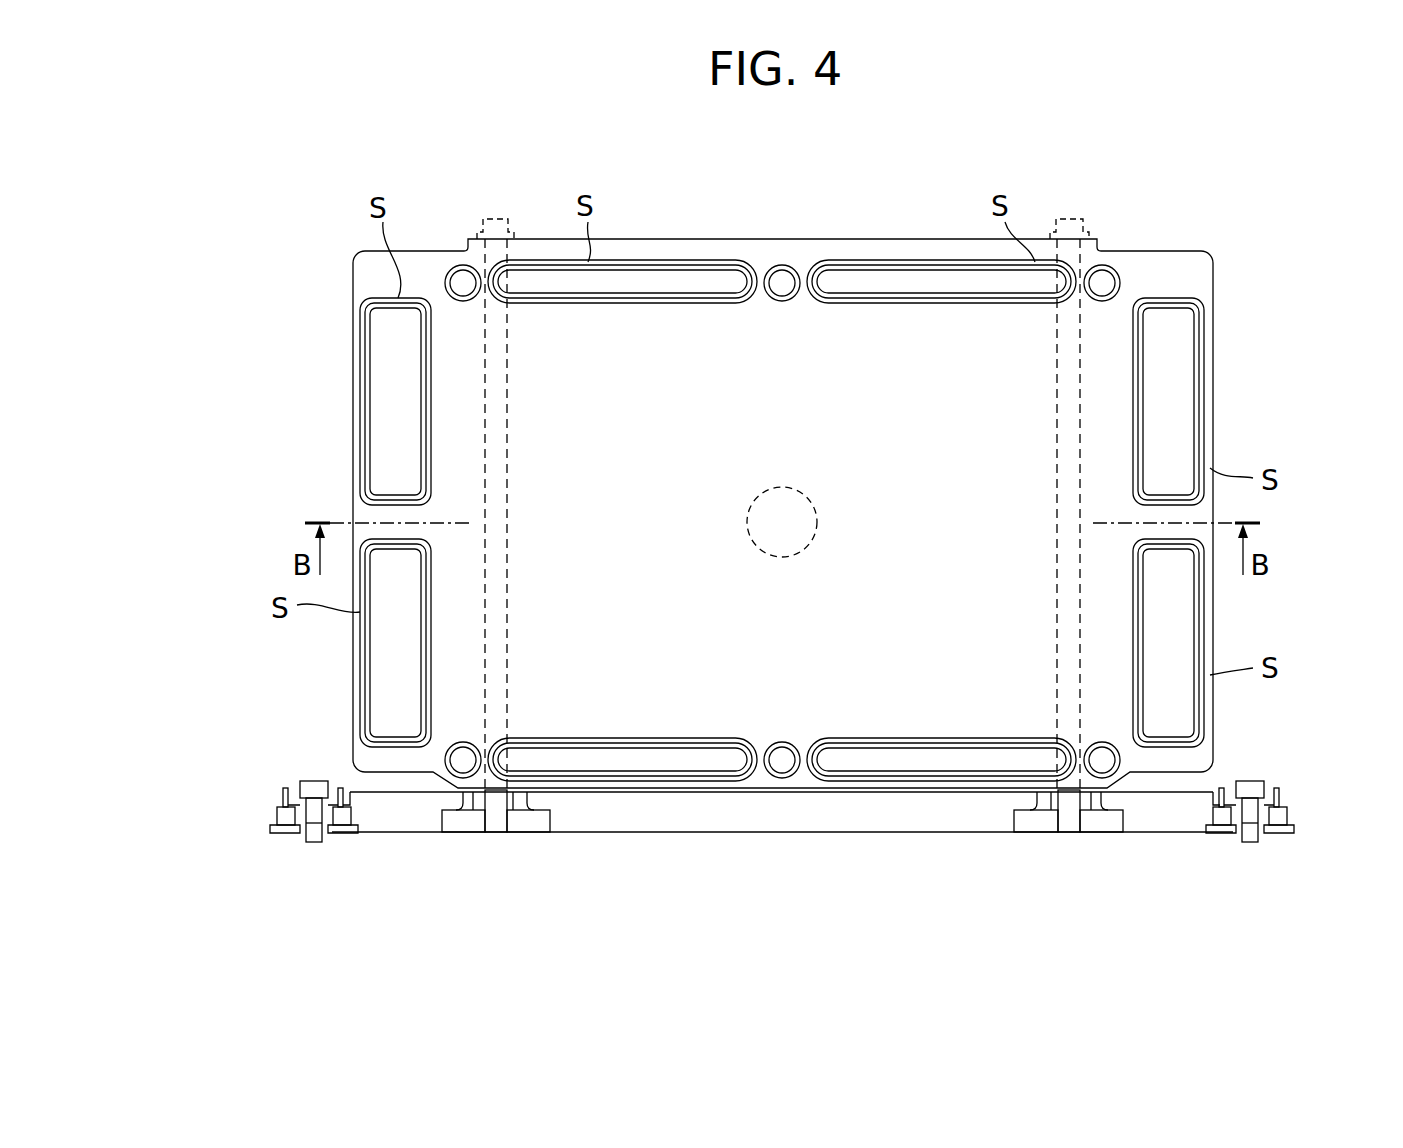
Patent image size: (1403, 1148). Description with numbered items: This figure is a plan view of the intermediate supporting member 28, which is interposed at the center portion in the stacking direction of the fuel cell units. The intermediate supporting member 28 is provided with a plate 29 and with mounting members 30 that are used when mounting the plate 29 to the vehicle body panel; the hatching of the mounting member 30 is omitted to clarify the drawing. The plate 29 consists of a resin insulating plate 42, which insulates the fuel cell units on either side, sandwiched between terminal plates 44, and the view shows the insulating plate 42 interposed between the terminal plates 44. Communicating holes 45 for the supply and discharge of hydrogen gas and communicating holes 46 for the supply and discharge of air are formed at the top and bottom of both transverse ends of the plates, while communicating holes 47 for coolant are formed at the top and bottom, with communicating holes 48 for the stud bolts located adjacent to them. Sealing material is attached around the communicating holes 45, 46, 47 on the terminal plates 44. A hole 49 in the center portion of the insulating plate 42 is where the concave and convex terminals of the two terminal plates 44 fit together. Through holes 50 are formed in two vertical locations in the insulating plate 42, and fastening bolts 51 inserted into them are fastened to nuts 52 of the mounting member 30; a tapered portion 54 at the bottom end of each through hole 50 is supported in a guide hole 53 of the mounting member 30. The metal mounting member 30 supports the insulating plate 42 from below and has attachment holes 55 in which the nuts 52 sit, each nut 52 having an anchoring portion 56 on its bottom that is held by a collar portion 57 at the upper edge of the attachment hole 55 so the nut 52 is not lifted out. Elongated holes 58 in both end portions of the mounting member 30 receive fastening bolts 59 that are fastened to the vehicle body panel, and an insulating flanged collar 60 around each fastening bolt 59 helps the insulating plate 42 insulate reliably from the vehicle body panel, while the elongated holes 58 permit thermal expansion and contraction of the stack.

The intermediate supporting member 28 is at (1236, 294).
The plate 29 is at (1228, 368).
The mounting member 30 is at (1220, 780).
The insulating plate 42 is at (555, 795).
The terminal plate 44 is at (899, 452).
The communicating hole 45 is at (395, 363).
The communicating hole 46 is at (1180, 422).
The communicating hole 47 is at (693, 285).
The communicating hole 48 is at (782, 290).
The hole 49 is at (810, 548).
The through hole 50 is at (485, 497).
The fastening bolt 51 is at (492, 216).
The nut 52 is at (495, 818).
The guide hole 53 is at (1093, 822).
The tapered portion 54 is at (1020, 820).
The attachment hole 55 is at (470, 822).
The anchoring portion 56 is at (528, 824).
The collar portion 57 is at (460, 806).
The elongated hole 58 is at (322, 842).
The fastening bolt 59 is at (314, 781).
The collar 60 is at (283, 800).